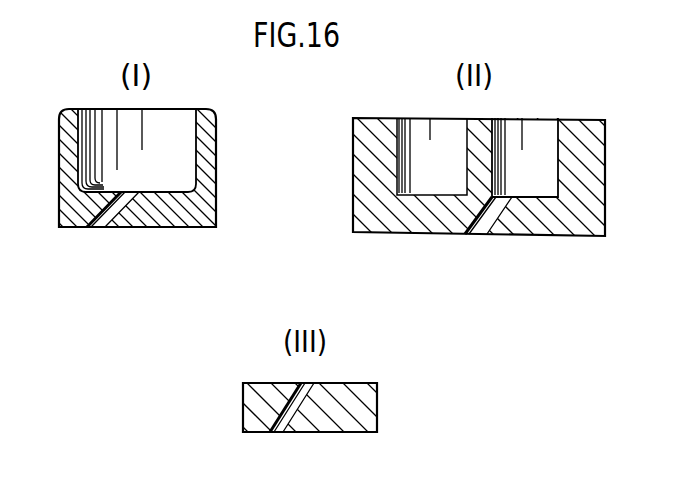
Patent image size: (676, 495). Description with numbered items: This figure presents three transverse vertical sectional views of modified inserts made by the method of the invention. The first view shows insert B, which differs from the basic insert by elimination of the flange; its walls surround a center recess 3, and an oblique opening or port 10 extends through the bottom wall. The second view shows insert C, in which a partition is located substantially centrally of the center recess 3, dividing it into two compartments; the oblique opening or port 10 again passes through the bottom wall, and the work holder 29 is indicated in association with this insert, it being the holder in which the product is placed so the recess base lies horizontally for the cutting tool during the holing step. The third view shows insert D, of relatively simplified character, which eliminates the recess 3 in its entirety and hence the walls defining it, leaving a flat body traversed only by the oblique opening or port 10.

The center recess 3 is at (174, 121).
The opening or port 10 is at (104, 219).
The work holder 29 is at (493, 151).
The insert B is at (218, 153).
The insert C is at (554, 119).
The insert D is at (338, 384).